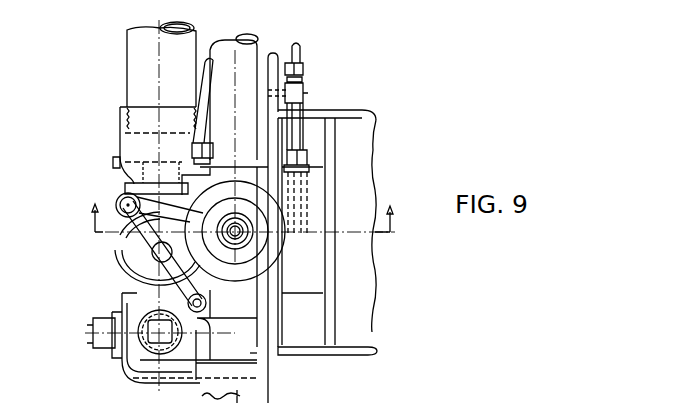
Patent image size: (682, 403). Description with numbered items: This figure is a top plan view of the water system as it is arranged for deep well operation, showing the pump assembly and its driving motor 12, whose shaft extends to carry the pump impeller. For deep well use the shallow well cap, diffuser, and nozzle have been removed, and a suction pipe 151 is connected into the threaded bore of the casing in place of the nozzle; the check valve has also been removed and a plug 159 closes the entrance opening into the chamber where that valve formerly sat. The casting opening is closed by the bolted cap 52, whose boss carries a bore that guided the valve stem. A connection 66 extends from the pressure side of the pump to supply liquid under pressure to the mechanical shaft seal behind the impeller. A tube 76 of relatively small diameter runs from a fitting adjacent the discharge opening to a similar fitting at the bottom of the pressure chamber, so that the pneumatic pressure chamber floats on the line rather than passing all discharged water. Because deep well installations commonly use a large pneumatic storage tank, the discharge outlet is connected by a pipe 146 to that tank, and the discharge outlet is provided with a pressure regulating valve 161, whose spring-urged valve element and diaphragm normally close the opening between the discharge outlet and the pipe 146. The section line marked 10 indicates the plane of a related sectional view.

The suction pipe 151 is at (130, 72).
The tube 76 is at (207, 108).
The connection 66 is at (300, 53).
The pipe 146 is at (250, 80).
The driving motor 12 is at (327, 236).
The section line 10 is at (247, 222).
The pressure regulating valve 161 is at (259, 244).
The cap 52 is at (135, 255).
The plug 159 is at (100, 350).